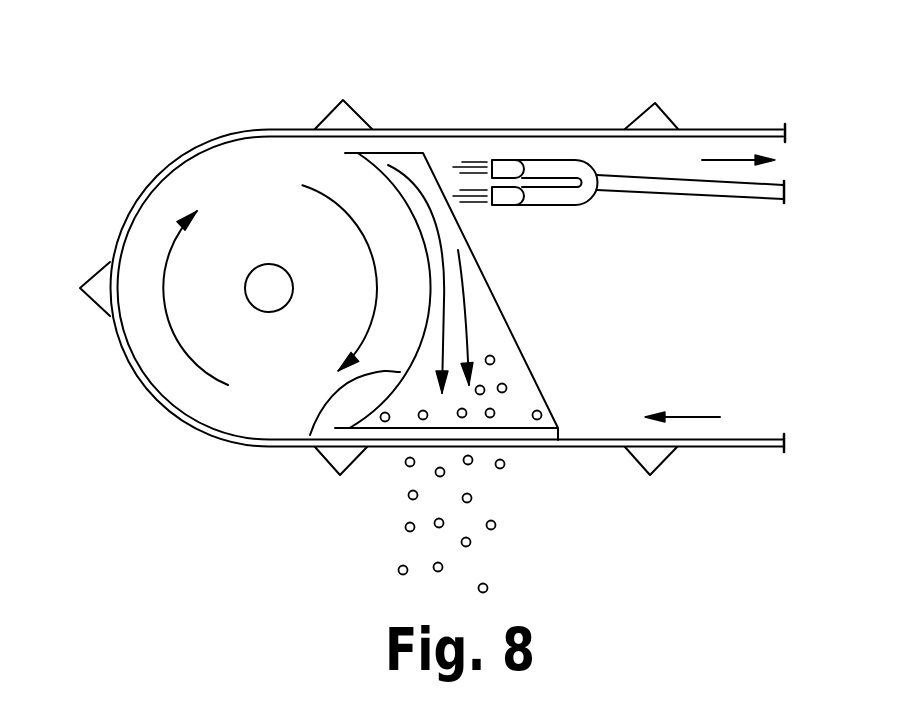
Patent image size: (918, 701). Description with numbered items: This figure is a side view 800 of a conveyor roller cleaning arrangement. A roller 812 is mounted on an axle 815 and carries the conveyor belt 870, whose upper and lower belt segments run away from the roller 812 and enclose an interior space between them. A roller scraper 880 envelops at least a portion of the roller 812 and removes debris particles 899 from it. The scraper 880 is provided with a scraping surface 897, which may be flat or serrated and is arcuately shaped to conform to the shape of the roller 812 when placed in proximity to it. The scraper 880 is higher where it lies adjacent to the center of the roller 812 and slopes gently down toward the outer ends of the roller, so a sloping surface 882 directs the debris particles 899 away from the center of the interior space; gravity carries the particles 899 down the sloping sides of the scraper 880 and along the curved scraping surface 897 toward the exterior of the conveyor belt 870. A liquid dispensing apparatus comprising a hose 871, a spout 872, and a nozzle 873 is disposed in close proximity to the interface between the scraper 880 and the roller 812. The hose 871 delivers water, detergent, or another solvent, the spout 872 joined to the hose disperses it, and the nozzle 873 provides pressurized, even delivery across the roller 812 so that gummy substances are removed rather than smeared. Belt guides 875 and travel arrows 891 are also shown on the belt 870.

The side view 800 is at (152, 85).
The roller 812 is at (167, 367).
The axle 815 is at (245, 288).
The conveyor belt 870 is at (433, 128).
The hose 871 is at (737, 190).
The spout 872 is at (563, 201).
The nozzle 873 is at (508, 195).
The belt guide rollers 875 is at (345, 102).
The roller scraper 880 is at (500, 300).
The sloping surface 882 is at (443, 234).
The belt travel direction arrows 891 is at (726, 162).
The scraping surface 897 is at (310, 435).
The debris particles 899 is at (494, 418).